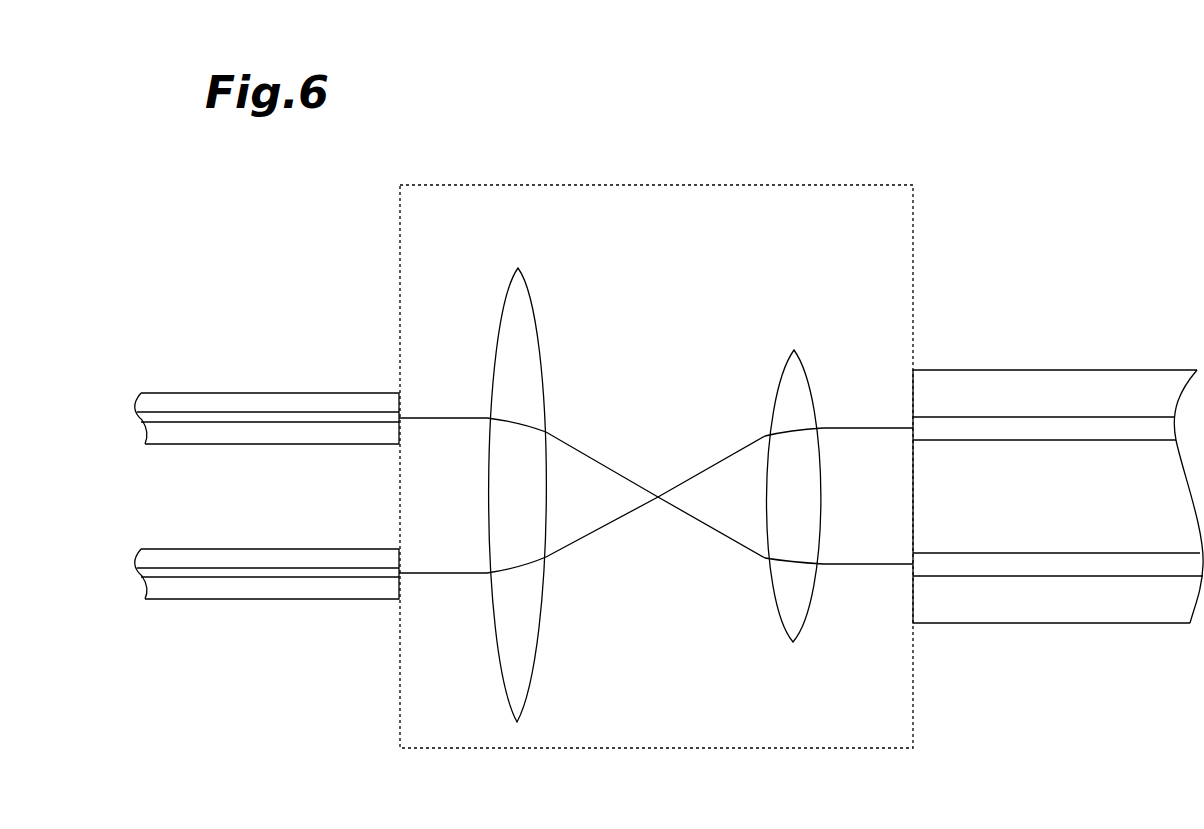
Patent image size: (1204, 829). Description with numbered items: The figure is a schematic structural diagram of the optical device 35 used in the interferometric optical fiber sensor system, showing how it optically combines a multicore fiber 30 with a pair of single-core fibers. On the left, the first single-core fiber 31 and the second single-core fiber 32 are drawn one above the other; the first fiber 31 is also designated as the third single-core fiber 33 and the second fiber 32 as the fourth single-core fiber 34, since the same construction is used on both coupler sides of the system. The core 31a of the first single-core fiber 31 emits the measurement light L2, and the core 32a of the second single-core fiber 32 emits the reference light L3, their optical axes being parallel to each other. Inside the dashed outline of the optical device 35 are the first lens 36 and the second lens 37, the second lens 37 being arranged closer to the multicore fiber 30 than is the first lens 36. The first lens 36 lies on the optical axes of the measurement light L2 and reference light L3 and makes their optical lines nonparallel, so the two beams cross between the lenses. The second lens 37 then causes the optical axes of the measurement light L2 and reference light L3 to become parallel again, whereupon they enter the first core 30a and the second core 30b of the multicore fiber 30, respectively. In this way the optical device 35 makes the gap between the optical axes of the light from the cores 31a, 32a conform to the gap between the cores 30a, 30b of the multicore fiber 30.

The multicore fiber 30 is at (1045, 380).
The first core 30a is at (1110, 565).
The second core 30b is at (1108, 425).
The first single-core fiber 31 is at (288, 393).
The core of the first single-core fiber 31a is at (196, 420).
The second single-core fiber 32 is at (288, 600).
The core of the second single-core fiber 32a is at (244, 568).
The third single-core fiber 33 is at (270, 418).
The fourth single-core fiber 34 is at (270, 574).
The optical device 35 is at (876, 185).
The first lens 36 is at (519, 268).
The second lens 37 is at (796, 350).
The measurement light L2 is at (437, 418).
The reference light L3 is at (447, 575).